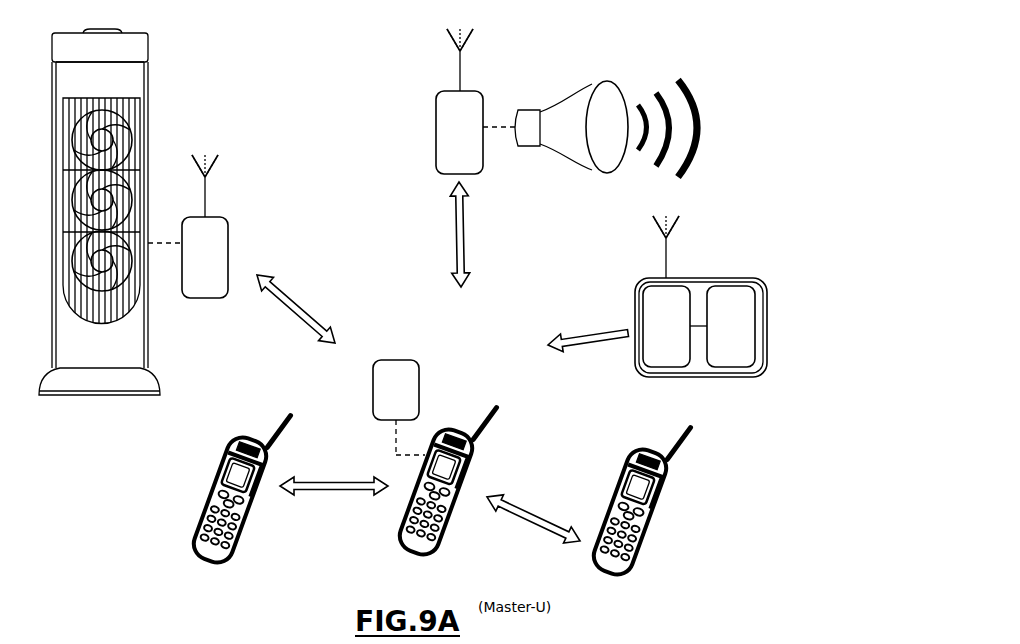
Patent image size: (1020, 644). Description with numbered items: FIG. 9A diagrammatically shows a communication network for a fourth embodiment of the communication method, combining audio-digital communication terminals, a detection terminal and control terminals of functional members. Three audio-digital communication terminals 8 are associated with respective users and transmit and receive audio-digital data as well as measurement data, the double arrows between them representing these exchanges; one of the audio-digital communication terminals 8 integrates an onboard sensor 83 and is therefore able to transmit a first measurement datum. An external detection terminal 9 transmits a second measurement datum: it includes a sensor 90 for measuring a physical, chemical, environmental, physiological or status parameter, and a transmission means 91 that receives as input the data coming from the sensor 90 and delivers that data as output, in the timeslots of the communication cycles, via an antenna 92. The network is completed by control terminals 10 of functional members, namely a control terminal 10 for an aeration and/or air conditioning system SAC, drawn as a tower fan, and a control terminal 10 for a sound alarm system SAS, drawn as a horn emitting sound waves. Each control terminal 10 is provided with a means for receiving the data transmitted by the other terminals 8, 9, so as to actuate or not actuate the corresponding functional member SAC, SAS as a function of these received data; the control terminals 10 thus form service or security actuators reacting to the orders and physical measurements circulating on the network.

The aeration and/or air conditioning system SAC is at (160, 68).
The control terminal 10 is at (236, 235).
The sound alarm system SAS is at (611, 70).
The detection terminal 9 is at (701, 316).
The sensor 90 is at (742, 337).
The transmission means 91 is at (678, 337).
The antenna 92 is at (668, 262).
The onboard sensor 83 is at (408, 406).
The audio-digital communication terminal 8 is at (256, 514).